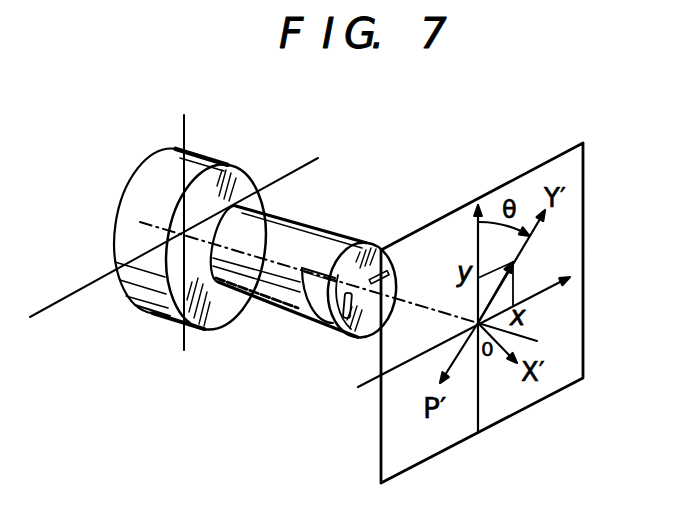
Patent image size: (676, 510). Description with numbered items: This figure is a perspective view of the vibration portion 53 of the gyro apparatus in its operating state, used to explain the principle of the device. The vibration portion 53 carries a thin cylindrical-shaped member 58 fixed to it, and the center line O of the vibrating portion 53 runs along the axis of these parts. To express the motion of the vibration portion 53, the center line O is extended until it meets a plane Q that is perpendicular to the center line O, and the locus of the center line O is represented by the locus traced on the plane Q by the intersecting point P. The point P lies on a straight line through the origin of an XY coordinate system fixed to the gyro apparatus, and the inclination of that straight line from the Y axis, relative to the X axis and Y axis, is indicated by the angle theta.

The vibration portion 53 is at (141, 304).
The cylindrical-shaped member 58 is at (323, 221).
The center line O is at (140, 222).
The plane Q is at (570, 195).
The X axis X is at (481, 320).
The Y axis Y is at (473, 301).
The intersecting point P is at (508, 285).